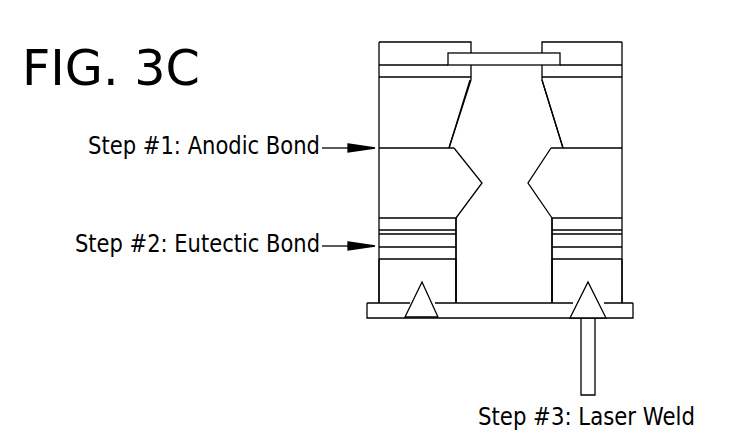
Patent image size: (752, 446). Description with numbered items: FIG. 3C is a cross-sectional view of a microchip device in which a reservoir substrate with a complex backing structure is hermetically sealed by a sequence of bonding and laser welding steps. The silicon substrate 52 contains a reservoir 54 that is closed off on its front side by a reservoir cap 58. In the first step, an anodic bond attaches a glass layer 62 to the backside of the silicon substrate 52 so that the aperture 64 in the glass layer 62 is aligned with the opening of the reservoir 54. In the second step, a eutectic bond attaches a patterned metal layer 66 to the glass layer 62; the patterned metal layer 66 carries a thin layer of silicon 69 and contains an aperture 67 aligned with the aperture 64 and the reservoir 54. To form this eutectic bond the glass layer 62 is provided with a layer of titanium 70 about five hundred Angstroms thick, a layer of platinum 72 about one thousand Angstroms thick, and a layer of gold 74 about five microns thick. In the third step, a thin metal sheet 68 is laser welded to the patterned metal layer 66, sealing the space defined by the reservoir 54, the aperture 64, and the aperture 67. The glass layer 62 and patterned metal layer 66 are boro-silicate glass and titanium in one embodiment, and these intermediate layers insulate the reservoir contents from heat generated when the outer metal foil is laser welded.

The silicon substrate 52 is at (607, 103).
The reservoir 54 is at (518, 120).
The reservoir cap 58 is at (503, 60).
The glass layer 62 is at (607, 174).
The aperture 64 is at (518, 186).
The patterned metal layer 66 is at (392, 281).
The aperture 67 is at (516, 272).
The thin metal sheet 68 is at (385, 310).
The layer of silicon 69 is at (617, 253).
The layer of titanium 70 is at (617, 227).
The layer of platinum 72 is at (615, 233).
The layer of gold 74 is at (617, 243).